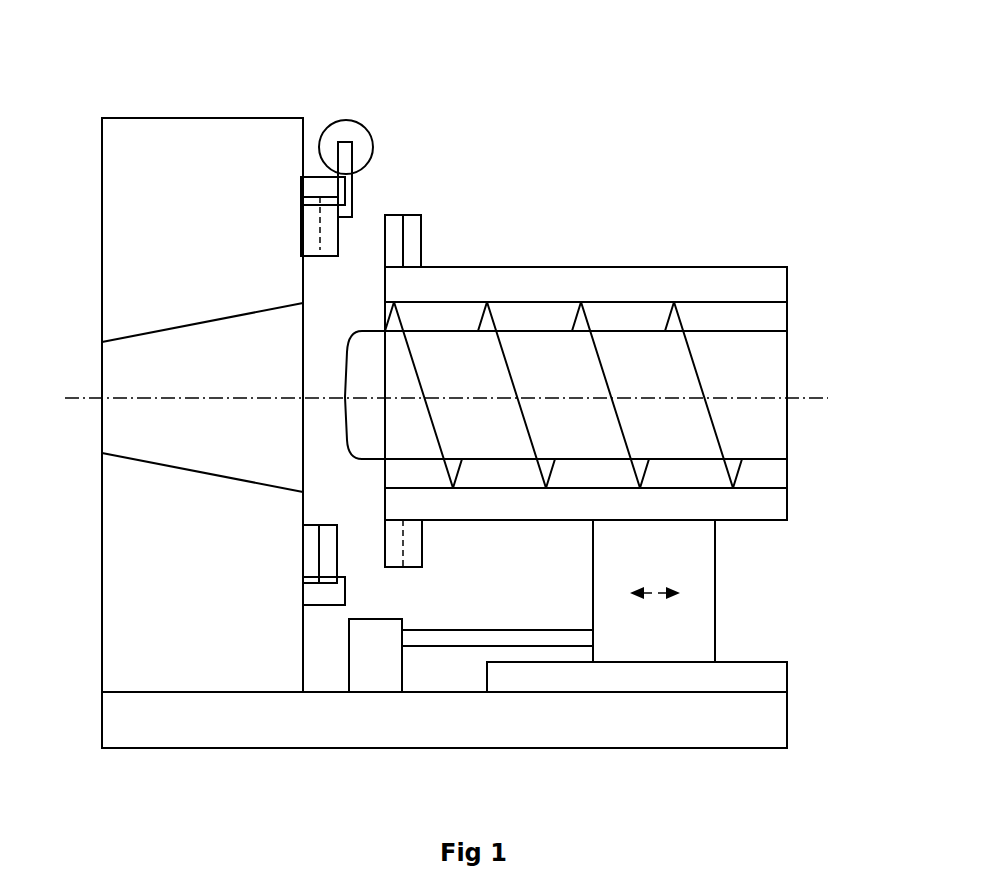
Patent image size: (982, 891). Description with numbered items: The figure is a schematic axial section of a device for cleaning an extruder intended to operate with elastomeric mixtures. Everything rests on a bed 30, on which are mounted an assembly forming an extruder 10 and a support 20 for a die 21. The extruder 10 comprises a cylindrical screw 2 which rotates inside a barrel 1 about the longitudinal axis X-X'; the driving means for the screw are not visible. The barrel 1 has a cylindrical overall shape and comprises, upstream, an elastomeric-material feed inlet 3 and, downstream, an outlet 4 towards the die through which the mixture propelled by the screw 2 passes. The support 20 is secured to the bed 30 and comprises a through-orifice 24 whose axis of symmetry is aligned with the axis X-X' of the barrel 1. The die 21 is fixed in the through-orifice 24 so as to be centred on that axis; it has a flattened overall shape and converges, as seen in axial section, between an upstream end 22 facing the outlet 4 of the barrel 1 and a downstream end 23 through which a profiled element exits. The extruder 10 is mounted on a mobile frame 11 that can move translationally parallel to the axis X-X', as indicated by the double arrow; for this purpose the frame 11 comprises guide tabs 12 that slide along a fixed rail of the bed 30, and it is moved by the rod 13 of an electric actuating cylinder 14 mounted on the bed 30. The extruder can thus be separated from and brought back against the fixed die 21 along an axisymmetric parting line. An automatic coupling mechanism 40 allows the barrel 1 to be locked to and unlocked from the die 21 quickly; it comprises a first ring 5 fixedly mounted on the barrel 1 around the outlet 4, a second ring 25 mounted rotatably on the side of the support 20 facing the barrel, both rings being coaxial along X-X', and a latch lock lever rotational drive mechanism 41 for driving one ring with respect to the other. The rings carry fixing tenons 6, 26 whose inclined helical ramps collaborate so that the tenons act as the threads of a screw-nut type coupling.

The barrel 1 is at (636, 285).
The screw 2 is at (765, 378).
The feed inlet 3 is at (792, 290).
The outlet 4 is at (370, 305).
The first ring 5 is at (416, 217).
The tenons 6 is at (395, 217).
The extruder 10 is at (600, 333).
The mobile frame 11 is at (697, 619).
The guide tabs 12 is at (765, 672).
The rod 13 is at (454, 630).
The electric actuating cylinder 14 is at (377, 660).
The support 20 is at (168, 118).
The die 21 is at (142, 336).
The upstream end 22 is at (303, 438).
The downstream end 23 is at (101, 432).
The through-orifice 24 is at (168, 395).
The second ring 25 is at (309, 557).
The tenons 26 is at (334, 558).
The bed 30 is at (598, 722).
The automatic coupling mechanism 40 is at (379, 162).
The latch lock lever rotational drive mechanism 41 is at (353, 117).